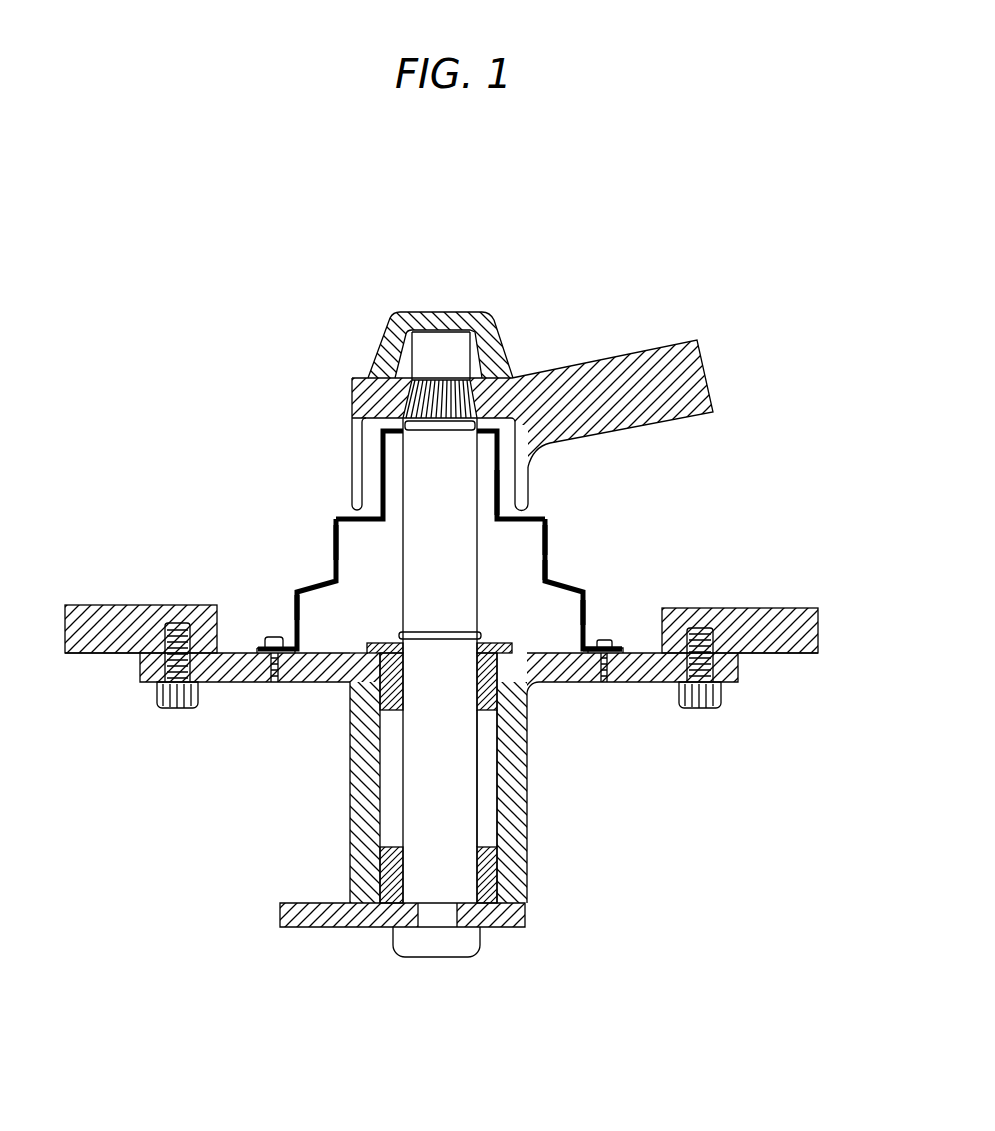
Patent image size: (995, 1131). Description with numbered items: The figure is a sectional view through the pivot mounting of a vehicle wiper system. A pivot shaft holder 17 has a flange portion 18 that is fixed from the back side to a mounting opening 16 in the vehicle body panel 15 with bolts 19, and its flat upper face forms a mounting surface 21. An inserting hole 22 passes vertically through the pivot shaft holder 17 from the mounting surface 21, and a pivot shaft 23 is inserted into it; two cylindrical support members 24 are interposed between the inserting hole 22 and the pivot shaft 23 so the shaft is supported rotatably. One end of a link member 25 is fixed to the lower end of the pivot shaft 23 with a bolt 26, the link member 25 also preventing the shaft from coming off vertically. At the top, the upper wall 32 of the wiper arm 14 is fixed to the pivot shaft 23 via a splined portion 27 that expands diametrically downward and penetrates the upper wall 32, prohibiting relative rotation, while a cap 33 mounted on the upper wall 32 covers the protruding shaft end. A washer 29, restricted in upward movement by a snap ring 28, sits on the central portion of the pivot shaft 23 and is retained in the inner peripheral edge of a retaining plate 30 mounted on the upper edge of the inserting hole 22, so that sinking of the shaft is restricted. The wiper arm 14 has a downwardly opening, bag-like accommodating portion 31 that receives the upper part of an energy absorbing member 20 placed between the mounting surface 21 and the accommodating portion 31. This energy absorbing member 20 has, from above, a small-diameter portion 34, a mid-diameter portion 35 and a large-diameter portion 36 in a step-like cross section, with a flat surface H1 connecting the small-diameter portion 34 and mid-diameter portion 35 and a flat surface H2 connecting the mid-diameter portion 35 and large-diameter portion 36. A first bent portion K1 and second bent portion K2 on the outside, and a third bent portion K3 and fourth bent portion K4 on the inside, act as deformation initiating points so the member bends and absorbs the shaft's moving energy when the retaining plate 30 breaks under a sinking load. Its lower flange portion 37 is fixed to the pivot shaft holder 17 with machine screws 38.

The wiper arm 14 is at (633, 362).
The vehicle body panel 15 is at (86, 606).
The mounting opening 16 is at (240, 636).
The pivot shaft holder 17 is at (348, 760).
The flange portion 18 is at (742, 675).
The bolts 19 is at (162, 708).
The energy absorbing member 20 is at (556, 539).
The mounting surface 21 is at (640, 655).
The inserting hole 22 is at (487, 777).
The pivot shaft 23 is at (428, 868).
The cylindrical support members 24 is at (487, 707).
The link member 25 is at (295, 927).
The bolt 26 is at (462, 940).
The splined portion 27 is at (472, 330).
The snap ring 28 is at (398, 632).
The washer 29 is at (380, 640).
The retaining plate 30 is at (368, 655).
The accommodating portion 31 is at (377, 425).
The upper wall 32 is at (378, 392).
The cap 33 is at (408, 311).
The small-diameter portion 34 is at (383, 455).
The mid-diameter portion 35 is at (333, 545).
The large-diameter portion 36 is at (590, 608).
The flange portion 37 is at (618, 681).
The machine screws 38 is at (610, 683).
The flat surface H1 is at (350, 503).
The flat surface H2 is at (305, 588).
The first bent portion K1 is at (553, 520).
The second bent portion K2 is at (583, 592).
The third bent portion K3 is at (495, 527).
The fourth bent portion K4 is at (544, 587).